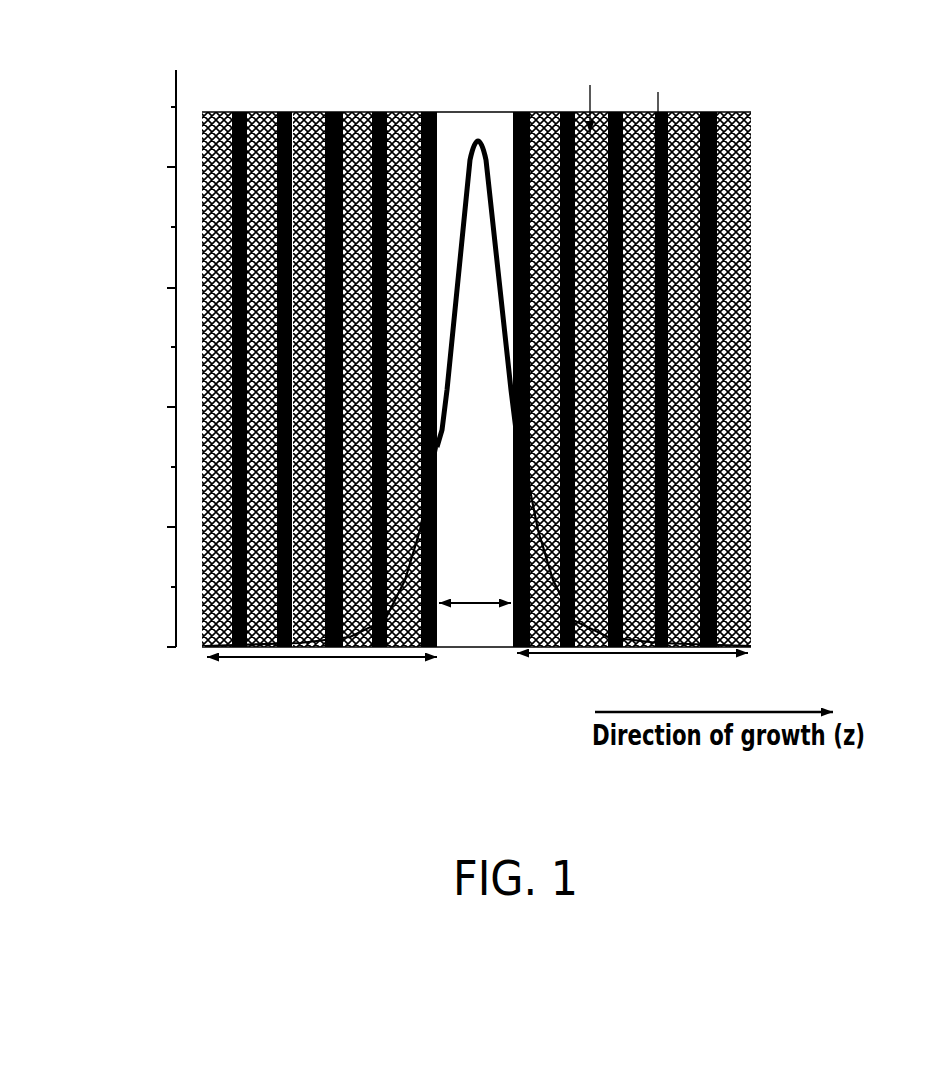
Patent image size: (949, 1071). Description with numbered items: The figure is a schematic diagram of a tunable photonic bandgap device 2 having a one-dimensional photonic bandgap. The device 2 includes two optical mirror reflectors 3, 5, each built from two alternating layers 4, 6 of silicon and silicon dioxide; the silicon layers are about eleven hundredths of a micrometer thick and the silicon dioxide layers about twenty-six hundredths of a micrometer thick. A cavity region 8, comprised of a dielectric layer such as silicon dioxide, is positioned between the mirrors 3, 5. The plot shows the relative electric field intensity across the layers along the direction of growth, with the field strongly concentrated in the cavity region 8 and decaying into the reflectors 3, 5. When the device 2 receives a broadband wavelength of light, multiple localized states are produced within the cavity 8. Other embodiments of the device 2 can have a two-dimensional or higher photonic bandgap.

The tunable photonic bandgap (PBG) device 2 is at (168, 750).
The optical mirror reflector 3 is at (320, 493).
The alternating layer 4 is at (216, 130).
The optical mirror reflector 5 is at (637, 413).
The alternating layer 6 is at (255, 130).
The cavity region 8 is at (470, 150).